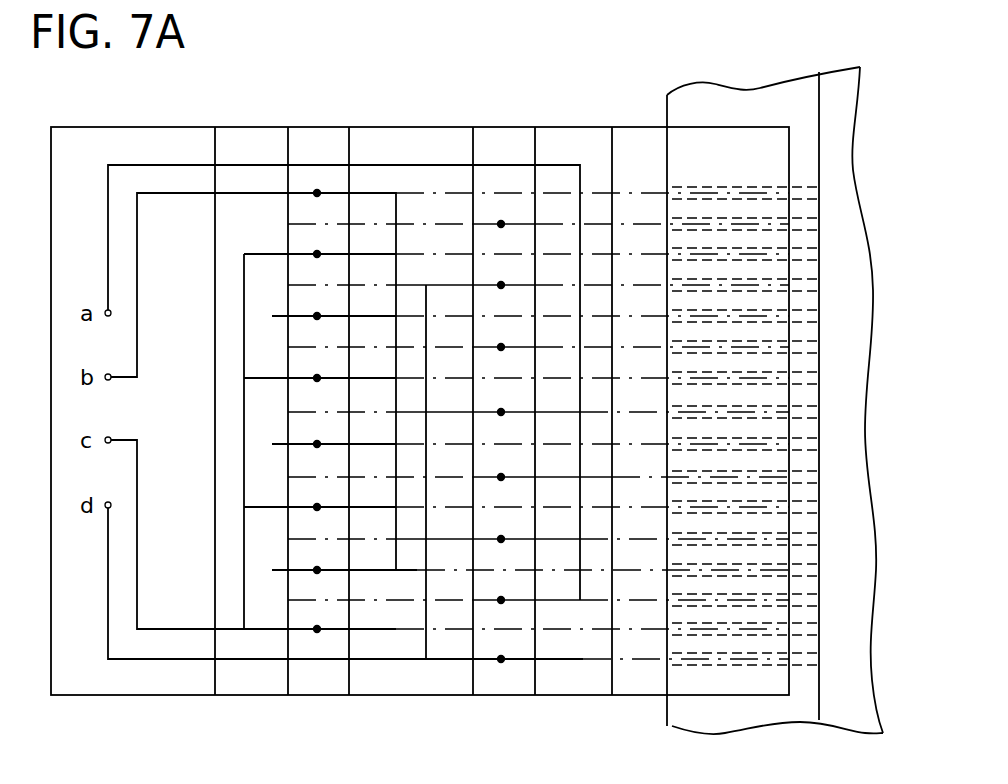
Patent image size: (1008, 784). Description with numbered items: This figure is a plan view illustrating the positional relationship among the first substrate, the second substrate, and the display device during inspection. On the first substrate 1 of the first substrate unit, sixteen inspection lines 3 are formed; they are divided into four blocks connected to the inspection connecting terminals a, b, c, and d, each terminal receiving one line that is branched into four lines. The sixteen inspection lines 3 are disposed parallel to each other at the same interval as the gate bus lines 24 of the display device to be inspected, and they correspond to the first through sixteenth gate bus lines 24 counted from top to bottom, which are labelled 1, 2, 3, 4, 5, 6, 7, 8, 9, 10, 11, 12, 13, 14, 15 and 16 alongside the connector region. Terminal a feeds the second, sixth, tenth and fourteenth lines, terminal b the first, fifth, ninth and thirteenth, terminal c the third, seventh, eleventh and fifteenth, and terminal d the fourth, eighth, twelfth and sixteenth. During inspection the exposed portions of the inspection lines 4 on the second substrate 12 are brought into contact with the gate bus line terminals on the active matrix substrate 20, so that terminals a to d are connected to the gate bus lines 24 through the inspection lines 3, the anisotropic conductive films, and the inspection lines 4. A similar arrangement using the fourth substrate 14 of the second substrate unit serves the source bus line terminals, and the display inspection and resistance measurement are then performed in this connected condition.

The first substrate 1 is at (576, 187).
The row electrode 2 is at (563, 218).
The inspection lines 3 is at (541, 248).
The inspection lines 4 is at (563, 279).
The row electrode 5 is at (555, 310).
The row electrode 6 is at (563, 341).
The row electrode 7 is at (541, 372).
The row electrode 8 is at (563, 406).
The row electrode 9 is at (555, 438).
The row electrode 10 is at (570, 471).
The row electrode 11 is at (531, 497).
The second substrate 12 is at (553, 529).
The row electrode 13 is at (545, 560).
The fourth substrate 14 is at (553, 590).
The row electrode 15 is at (567, 619).
The row electrode 16 is at (674, 653).
The active matrix substrate 20 is at (688, 710).
The gate bus lines 24 is at (866, 400).